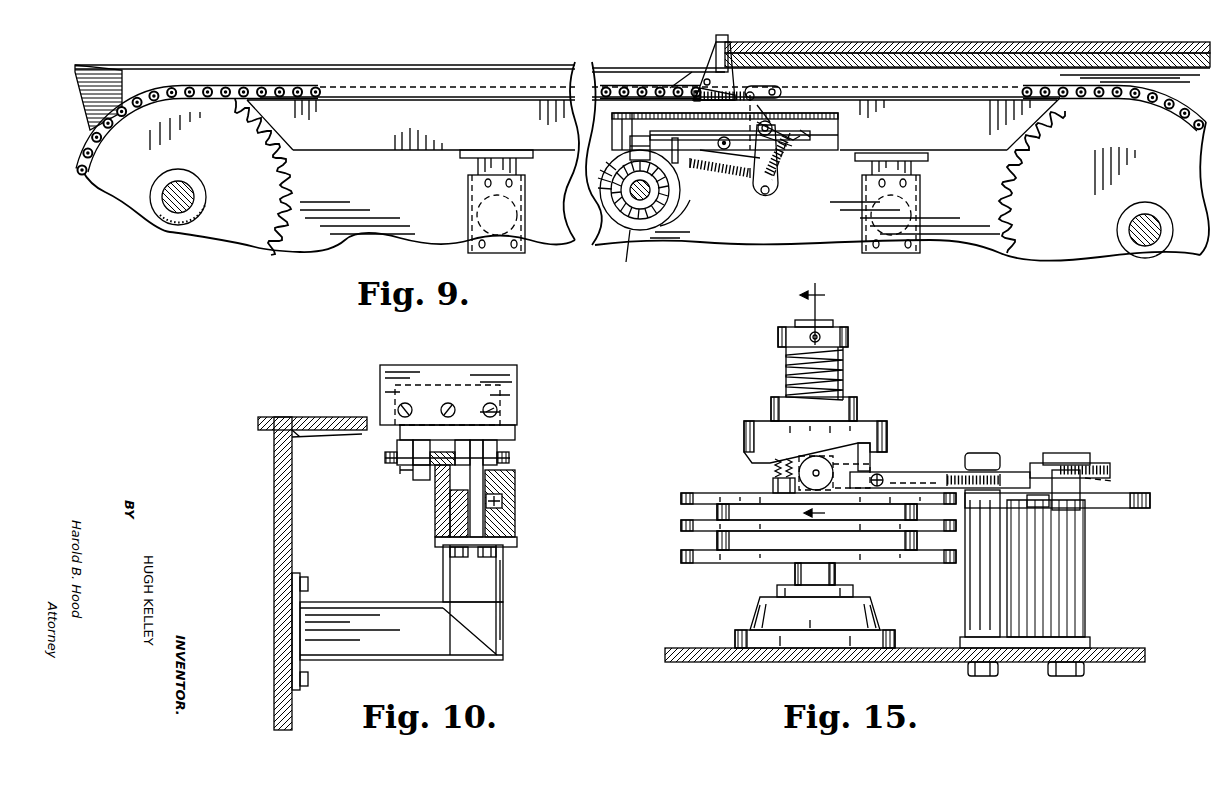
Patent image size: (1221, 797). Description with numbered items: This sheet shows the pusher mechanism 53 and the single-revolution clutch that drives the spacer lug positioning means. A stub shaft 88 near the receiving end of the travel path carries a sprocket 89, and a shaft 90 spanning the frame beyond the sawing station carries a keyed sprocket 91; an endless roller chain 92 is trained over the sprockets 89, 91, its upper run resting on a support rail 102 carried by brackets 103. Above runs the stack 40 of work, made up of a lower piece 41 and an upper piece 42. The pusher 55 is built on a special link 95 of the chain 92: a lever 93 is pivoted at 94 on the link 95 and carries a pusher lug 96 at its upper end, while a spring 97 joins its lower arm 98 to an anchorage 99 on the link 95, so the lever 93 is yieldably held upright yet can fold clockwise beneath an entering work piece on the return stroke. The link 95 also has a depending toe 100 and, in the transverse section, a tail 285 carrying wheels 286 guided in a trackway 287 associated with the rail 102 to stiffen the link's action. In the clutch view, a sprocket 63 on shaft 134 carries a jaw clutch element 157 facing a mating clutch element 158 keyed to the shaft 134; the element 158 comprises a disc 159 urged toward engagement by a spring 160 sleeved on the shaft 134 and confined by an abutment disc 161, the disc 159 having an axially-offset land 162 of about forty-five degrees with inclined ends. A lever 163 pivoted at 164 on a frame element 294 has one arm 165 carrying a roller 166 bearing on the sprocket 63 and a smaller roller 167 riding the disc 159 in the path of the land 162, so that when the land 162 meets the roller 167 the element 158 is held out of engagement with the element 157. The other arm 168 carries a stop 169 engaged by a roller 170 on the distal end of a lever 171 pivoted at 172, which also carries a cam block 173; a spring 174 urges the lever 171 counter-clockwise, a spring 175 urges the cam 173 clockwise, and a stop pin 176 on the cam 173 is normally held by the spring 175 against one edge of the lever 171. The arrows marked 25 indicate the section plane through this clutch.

In FIG. 15, the direction of movement arrow 25 is at (812, 399).
In FIG. 9, the stack 40 is at (967, 33).
In FIG. 9, the lower piece 41 is at (1060, 58).
In FIG. 9, the upper piece 42 is at (1033, 42).
In FIG. 9, the pusher mechanism 53 is at (148, 82).
In FIG. 9, the pusher 55 is at (690, 29).
In FIG. 15, the sprocket 63 is at (697, 495).
In FIG. 9, the stub shaft 88 is at (182, 192).
In FIG. 9, the sprocket 89 is at (238, 240).
In FIG. 9, the shaft 90 is at (1142, 246).
In FIG. 9, the sprocket 91 is at (1048, 248).
In FIG. 9, the endless roller chain 92 is at (658, 86).
In FIG. 10, the endless roller chain 92 is at (455, 450).
In FIG. 9, the lever 93 is at (715, 62).
In FIG. 10, the lever 93 is at (515, 431).
In FIG. 9, the pivot 94 is at (700, 70).
In FIG. 9, the special link 95 is at (782, 90).
In FIG. 10, the special link 95 is at (421, 440).
In FIG. 9, the pusher lug 96 is at (728, 35).
In FIG. 10, the pusher lug 96 is at (517, 377).
In FIG. 9, the spring 97 is at (741, 93).
In FIG. 10, the spring 97 is at (385, 458).
In FIG. 9, the lower arm 98 is at (700, 88).
In FIG. 10, the lower arm 98 is at (397, 448).
In FIG. 9, the anchorage 99 is at (751, 93).
In FIG. 10, the anchorage 99 is at (400, 472).
In FIG. 9, the depending toe 100 is at (725, 131).
In FIG. 10, the depending toe 100 is at (418, 481).
In FIG. 9, the support rail 102 is at (386, 150).
In FIG. 10, the support rail 102 is at (436, 530).
In FIG. 9, the brackets 103 is at (476, 168).
In FIG. 10, the brackets 103 is at (374, 606).
In FIG. 9, the shaft 134 is at (648, 195).
In FIG. 15, the shaft 134 is at (800, 576).
In FIG. 15, the jaw clutch element 157 is at (773, 486).
In FIG. 9, the mating clutch element 158 is at (620, 252).
In FIG. 15, the mating clutch element 158 is at (860, 455).
In FIG. 9, the disc 159 is at (612, 210).
In FIG. 15, the disc 159 is at (786, 411).
In FIG. 15, the spring 160 is at (790, 371).
In FIG. 15, the abutment disc 161 is at (794, 333).
In FIG. 9, the axially-offset land 162 is at (612, 181).
In FIG. 15, the axially-offset land 162 is at (774, 462).
In FIG. 9, the lever 163 is at (730, 150).
In FIG. 15, the lever 163 is at (978, 508).
In FIG. 9, the pivot 164 is at (718, 143).
In FIG. 15, the pivot 164 is at (983, 455).
In FIG. 9, the lever arm 165 is at (677, 163).
In FIG. 15, the lever arm 165 is at (912, 473).
In FIG. 9, the roller 166 is at (640, 138).
In FIG. 15, the roller 166 is at (866, 471).
In FIG. 9, the roller 167 is at (628, 130).
In FIG. 15, the roller 167 is at (870, 484).
In FIG. 9, the lever arm 168 is at (800, 138).
In FIG. 15, the lever arm 168 is at (1150, 500).
In FIG. 9, the stop 169 is at (757, 128).
In FIG. 15, the stop 169 is at (1040, 510).
In FIG. 9, the roller 170 is at (782, 131).
In FIG. 15, the roller 170 is at (1072, 502).
In FIG. 9, the lever 171 is at (778, 190).
In FIG. 15, the lever 171 is at (1062, 453).
In FIG. 9, the pivotal mounting 172 is at (765, 200).
In FIG. 9, the cam block 173 is at (772, 117).
In FIG. 15, the cam block 173 is at (1110, 468).
In FIG. 9, the spring 174 is at (729, 176).
In FIG. 15, the spring 174 is at (1012, 473).
In FIG. 9, the spring 175 is at (784, 166).
In FIG. 15, the spring 175 is at (1112, 481).
In FIG. 9, the stop pin 176 is at (786, 150).
In FIG. 15, the stop pin 176 is at (1084, 463).
In FIG. 10, the tail 285 is at (478, 542).
In FIG. 10, the wheels 286 is at (502, 503).
In FIG. 10, the trackway 287 is at (518, 493).
In FIG. 15, the frame assembly element 294 is at (1096, 648).